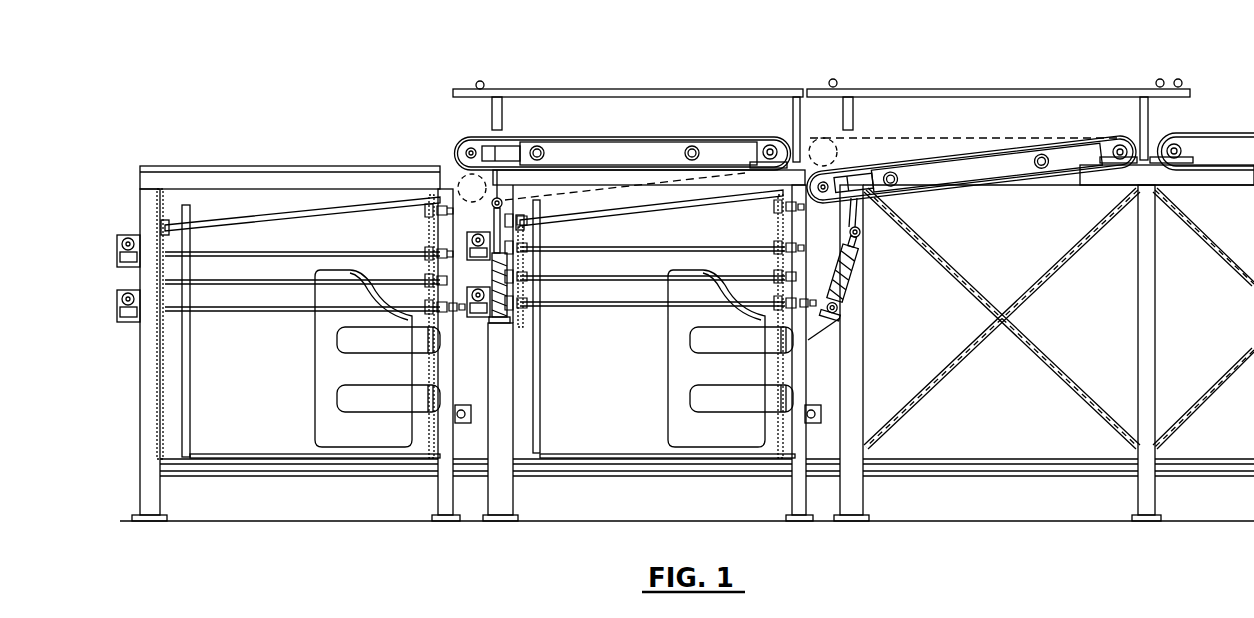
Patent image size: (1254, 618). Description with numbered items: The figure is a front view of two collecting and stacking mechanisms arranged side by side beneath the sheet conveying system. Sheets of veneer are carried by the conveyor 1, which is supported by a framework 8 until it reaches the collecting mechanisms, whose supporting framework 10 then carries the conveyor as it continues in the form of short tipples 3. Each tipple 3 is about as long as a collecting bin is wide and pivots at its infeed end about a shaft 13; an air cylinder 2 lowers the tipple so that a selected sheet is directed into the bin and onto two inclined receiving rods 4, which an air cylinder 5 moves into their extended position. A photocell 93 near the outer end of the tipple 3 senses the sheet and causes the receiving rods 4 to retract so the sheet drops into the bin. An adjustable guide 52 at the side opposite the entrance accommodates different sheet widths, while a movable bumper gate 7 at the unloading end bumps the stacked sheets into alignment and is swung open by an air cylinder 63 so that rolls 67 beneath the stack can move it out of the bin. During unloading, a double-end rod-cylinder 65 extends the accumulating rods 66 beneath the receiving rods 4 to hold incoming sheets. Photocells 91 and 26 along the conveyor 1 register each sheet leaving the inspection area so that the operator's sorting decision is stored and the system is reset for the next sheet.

The conveyor 1 is at (1204, 133).
The air cylinder 2 is at (486, 287).
The tipple 3 is at (608, 148).
The receiving rods 4 is at (245, 216).
The air cylinder 5 is at (124, 236).
The bumper gate 7 is at (325, 378).
The framework 8 is at (1150, 300).
The supporting framework 10 is at (445, 379).
The shaft 13 is at (773, 147).
The photocell 26 is at (1158, 79).
The adjustable guide 52 is at (190, 372).
The air cylinder 63 is at (463, 423).
The double-end rod-cylinder 65 is at (124, 292).
The accumulating rods 66 is at (283, 278).
The rolls 67 is at (265, 455).
The photocell 91 is at (1180, 79).
The photocell 93 is at (482, 81).